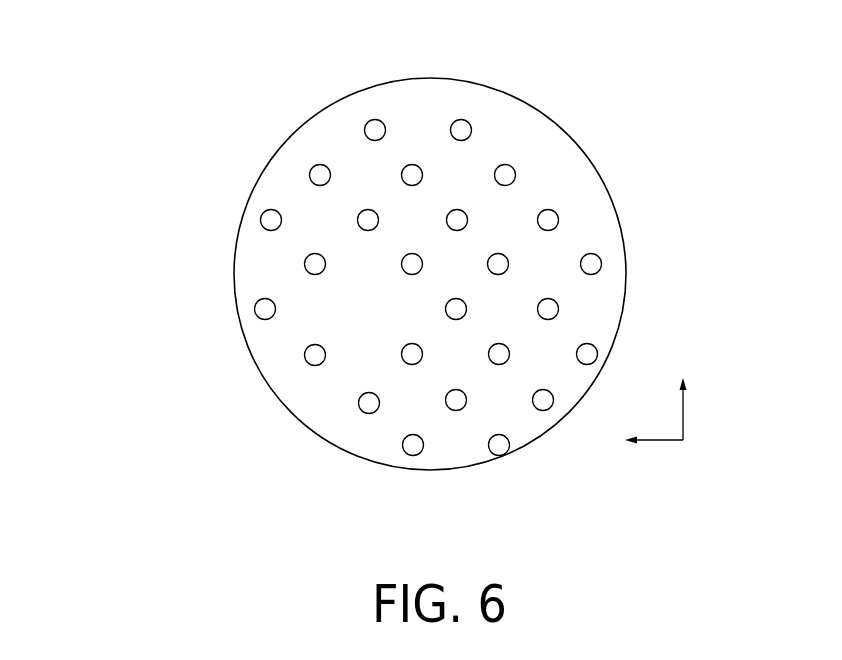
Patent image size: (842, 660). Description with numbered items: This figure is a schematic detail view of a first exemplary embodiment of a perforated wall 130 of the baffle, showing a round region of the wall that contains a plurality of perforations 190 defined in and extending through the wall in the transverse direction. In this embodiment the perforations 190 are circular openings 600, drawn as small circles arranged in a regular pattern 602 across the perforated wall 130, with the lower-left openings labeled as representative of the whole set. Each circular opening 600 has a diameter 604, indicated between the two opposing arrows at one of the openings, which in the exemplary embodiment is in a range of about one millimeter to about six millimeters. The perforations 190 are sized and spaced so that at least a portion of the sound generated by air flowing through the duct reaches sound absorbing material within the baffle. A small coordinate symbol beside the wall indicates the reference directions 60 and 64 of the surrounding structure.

The perforated wall 130 is at (513, 125).
The pattern 602 is at (327, 274).
The diameter 604 is at (452, 175).
The perforations 190 is at (216, 360).
The circular openings 600 is at (344, 410).
The vertical direction axis 64 is at (684, 415).
The horizontal direction axis 60 is at (656, 441).